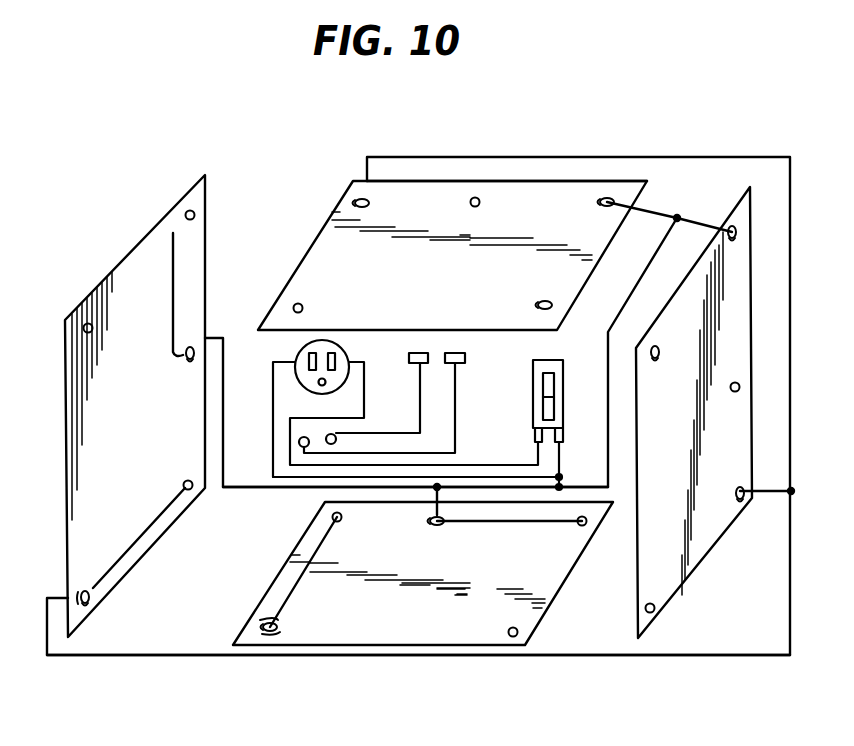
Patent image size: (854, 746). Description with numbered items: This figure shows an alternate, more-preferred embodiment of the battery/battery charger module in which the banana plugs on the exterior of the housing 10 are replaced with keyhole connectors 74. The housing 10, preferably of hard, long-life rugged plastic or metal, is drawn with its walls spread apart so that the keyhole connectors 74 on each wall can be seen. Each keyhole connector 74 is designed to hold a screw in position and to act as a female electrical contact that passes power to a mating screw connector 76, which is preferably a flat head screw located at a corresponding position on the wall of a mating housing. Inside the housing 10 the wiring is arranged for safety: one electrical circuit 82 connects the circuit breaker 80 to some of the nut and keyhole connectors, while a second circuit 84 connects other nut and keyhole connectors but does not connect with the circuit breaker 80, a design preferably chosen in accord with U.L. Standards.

The housing 10 is at (522, 138).
The keyhole connectors 74 is at (360, 198).
The screw connector 76 is at (474, 198).
The circuit breaker 80 is at (558, 360).
The electrical circuit 82 is at (237, 490).
The second circuit 84 is at (216, 656).